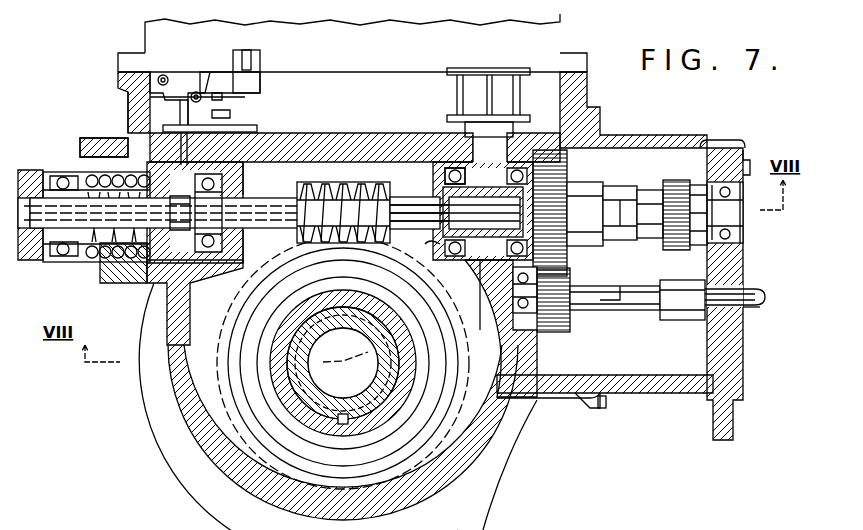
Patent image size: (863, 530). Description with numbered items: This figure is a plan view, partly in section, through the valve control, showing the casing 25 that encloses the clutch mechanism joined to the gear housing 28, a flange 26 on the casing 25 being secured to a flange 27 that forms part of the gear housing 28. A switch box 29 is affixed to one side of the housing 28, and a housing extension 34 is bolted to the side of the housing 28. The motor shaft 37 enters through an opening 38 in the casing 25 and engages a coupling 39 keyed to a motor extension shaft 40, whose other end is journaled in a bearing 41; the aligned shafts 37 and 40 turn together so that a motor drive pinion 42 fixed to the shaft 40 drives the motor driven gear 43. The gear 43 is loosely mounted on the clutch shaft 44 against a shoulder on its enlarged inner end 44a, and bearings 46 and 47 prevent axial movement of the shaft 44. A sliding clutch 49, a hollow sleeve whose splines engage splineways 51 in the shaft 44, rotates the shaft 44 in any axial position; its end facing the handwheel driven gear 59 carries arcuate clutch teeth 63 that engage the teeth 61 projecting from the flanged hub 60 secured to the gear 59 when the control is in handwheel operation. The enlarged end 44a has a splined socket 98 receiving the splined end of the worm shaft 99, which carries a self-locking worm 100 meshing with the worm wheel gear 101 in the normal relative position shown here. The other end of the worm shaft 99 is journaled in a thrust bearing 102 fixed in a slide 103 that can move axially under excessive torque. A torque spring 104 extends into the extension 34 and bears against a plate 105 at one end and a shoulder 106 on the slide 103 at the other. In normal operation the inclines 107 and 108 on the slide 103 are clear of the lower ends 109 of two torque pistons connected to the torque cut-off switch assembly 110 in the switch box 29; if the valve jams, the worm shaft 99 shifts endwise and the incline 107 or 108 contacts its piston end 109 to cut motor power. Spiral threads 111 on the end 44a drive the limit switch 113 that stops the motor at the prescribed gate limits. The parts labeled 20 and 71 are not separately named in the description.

The housing 20 is at (156, 445).
The casing 25 is at (654, 392).
The flange 26 is at (598, 404).
The flange 27 is at (570, 395).
The gear housing 28 is at (490, 455).
The switch box 29 is at (565, 29).
The housing extension 34 is at (54, 262).
The motor shaft 37 is at (760, 296).
The opening 38 is at (745, 310).
The coupling 39 is at (672, 320).
The motor extension shaft 40 is at (603, 310).
The bearing 41 is at (500, 303).
The motor drive pinion 42 is at (530, 314).
The motor driven gear 43 is at (565, 163).
The clutch shaft 44 is at (735, 212).
The enlarged inner end of clutch shaft 44a is at (578, 182).
The bearing 46 is at (452, 170).
The bearing 47 is at (738, 238).
The sliding clutch 49 is at (598, 242).
The splineways 51 is at (678, 240).
The handwheel driven gear 59 is at (712, 148).
The flanged hub 60 is at (705, 148).
The arcuate teeth 61 is at (735, 258).
The arcuate clutch teeth 63 is at (668, 182).
The sleeve 71 is at (640, 240).
The splined socket 98 is at (504, 176).
The worm shaft 99 is at (392, 198).
The worm 100 is at (338, 182).
The worm wheel gear 101 is at (353, 488).
The thrust bearing 102 is at (218, 208).
The slide 103 is at (226, 252).
The torque spring 104 is at (92, 263).
The plate 105 is at (40, 168).
The shoulder 106 is at (140, 262).
The cam 107 is at (255, 164).
The cam 108 is at (170, 162).
The lower ends of torque pistons 109 is at (185, 165).
The torque cut-off switch assembly 110 is at (205, 107).
The spiral threads 111 is at (448, 240).
The limit switch 113 is at (452, 80).